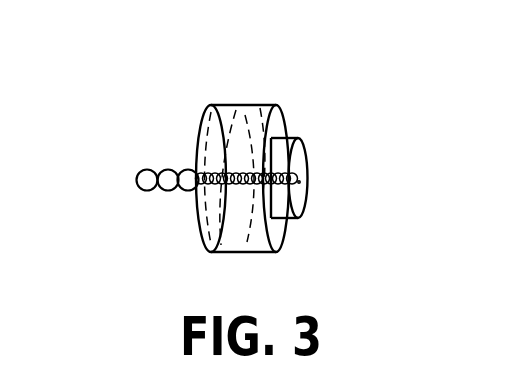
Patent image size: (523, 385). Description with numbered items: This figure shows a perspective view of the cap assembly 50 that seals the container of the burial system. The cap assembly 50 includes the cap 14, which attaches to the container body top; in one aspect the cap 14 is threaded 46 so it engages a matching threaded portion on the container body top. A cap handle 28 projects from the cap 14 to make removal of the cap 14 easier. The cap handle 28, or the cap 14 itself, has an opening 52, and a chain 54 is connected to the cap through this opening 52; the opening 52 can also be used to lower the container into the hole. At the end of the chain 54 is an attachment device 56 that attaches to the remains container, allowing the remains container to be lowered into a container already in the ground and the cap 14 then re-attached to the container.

The cap 14 is at (260, 105).
The threaded 46 is at (210, 108).
The cap assembly 50 is at (207, 117).
The opening 52 is at (302, 139).
The cap handle 28 is at (299, 182).
The chain 54 is at (195, 187).
The attachment device 56 is at (140, 171).